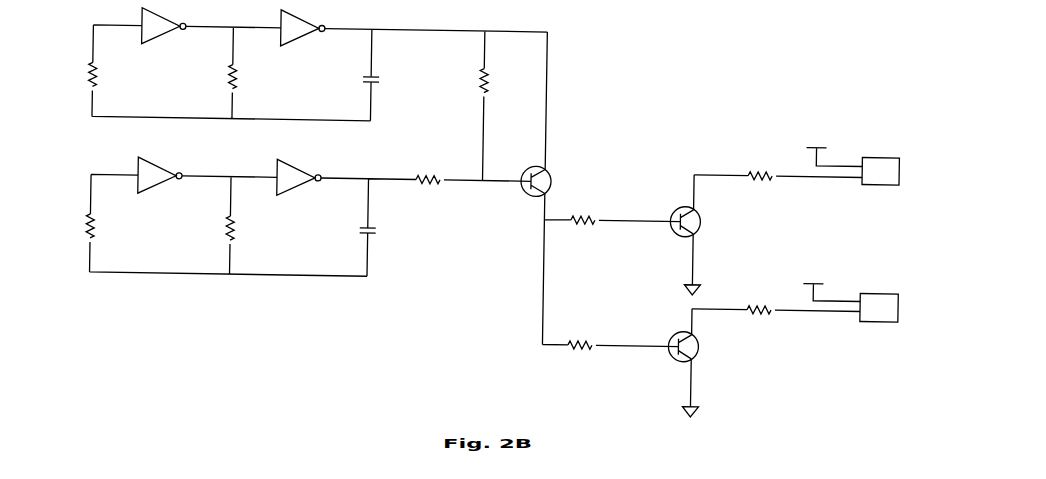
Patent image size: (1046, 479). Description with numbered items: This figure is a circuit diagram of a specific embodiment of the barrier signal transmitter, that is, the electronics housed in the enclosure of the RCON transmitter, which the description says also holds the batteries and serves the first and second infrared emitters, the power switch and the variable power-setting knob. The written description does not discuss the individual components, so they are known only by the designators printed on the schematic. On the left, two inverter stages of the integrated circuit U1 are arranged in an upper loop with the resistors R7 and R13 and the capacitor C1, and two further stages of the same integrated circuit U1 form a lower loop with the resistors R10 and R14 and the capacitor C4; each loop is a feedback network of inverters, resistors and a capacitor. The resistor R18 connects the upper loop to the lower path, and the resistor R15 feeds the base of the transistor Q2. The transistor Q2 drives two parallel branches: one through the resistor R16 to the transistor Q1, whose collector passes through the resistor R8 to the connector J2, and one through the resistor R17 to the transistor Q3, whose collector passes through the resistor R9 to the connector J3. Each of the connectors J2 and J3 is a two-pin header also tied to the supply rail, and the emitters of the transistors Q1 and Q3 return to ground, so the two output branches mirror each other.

The hex Schmitt-trigger inverter 74HC14 (sections F, A, E, B) U1 is at (234, 105).
The resistor 100K R7 is at (96, 79).
The resistor 100K R13 is at (234, 79).
The capacitor 1000 C1 is at (371, 78).
The resistor 1K R18 is at (483, 81).
The resistor 100K R10 is at (88, 226).
The resistor 100K R14 is at (229, 229).
The capacitor 1000 C4 is at (366, 230).
The resistor 1K R15 is at (429, 183).
The PNP transistor MMBT4403 Q2 is at (510, 186).
The resistor 470 R16 is at (583, 226).
The NPN transistor MMBT4401 Q1 is at (659, 234).
The resistor 4.7 R8 is at (762, 177).
The connector HRS1X2P079R J2 is at (867, 169).
The resistor 470 R17 is at (580, 347).
The NPN transistor MMBT4401 Q3 is at (655, 362).
The resistor 10 R9 is at (759, 310).
The connector HRS1X2P079R J3 is at (862, 306).